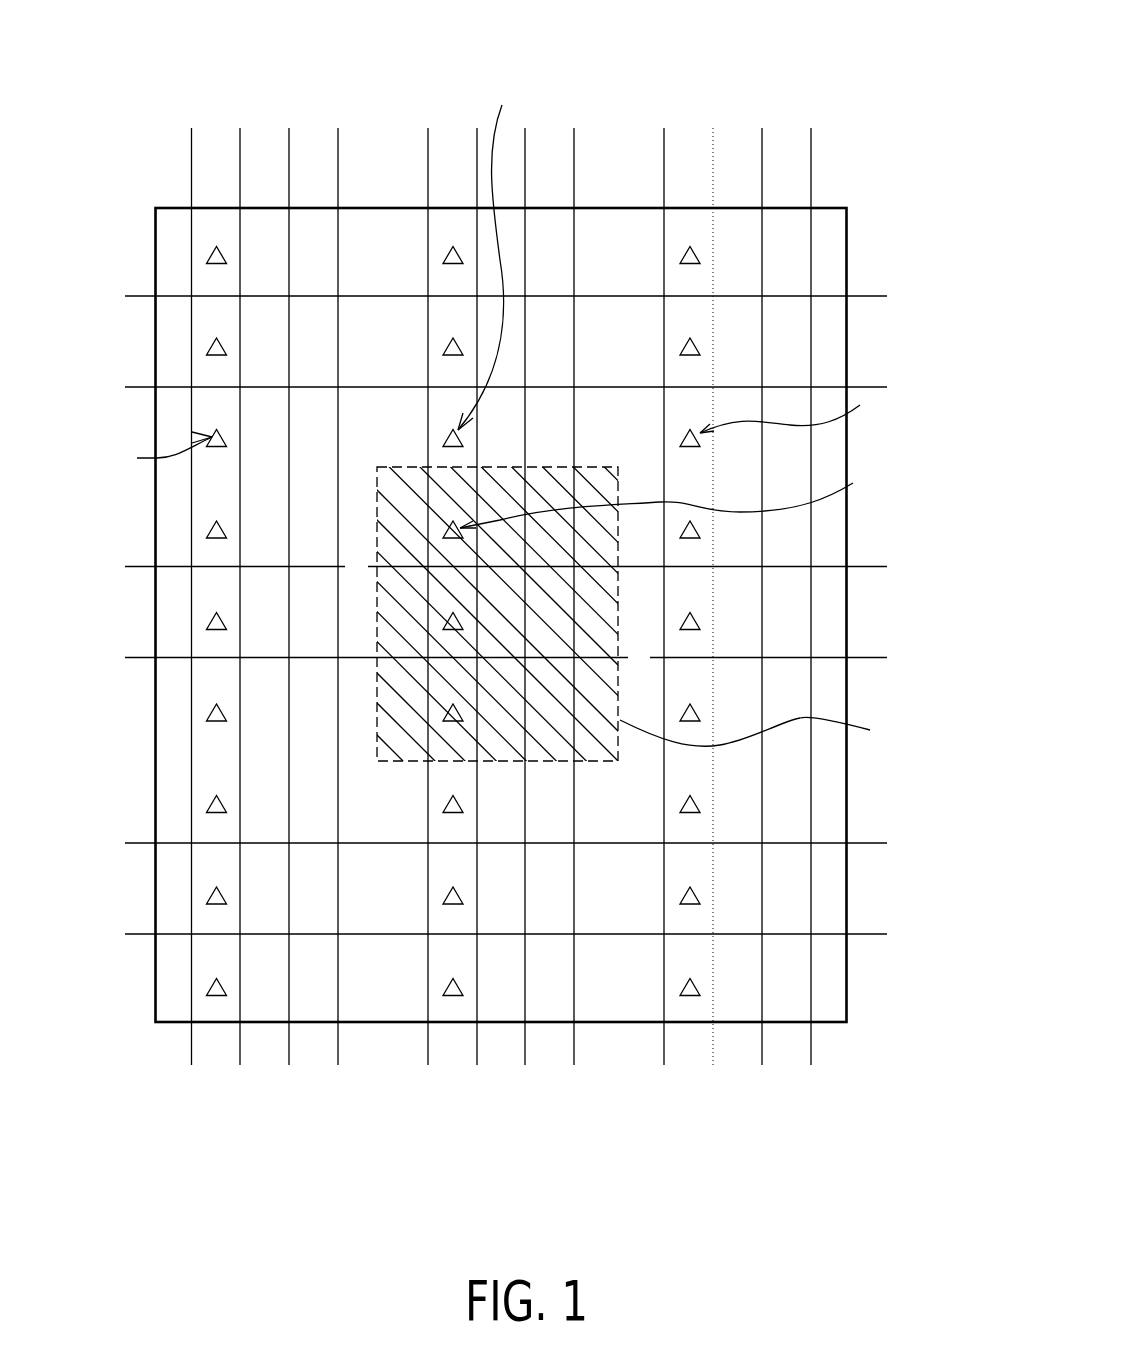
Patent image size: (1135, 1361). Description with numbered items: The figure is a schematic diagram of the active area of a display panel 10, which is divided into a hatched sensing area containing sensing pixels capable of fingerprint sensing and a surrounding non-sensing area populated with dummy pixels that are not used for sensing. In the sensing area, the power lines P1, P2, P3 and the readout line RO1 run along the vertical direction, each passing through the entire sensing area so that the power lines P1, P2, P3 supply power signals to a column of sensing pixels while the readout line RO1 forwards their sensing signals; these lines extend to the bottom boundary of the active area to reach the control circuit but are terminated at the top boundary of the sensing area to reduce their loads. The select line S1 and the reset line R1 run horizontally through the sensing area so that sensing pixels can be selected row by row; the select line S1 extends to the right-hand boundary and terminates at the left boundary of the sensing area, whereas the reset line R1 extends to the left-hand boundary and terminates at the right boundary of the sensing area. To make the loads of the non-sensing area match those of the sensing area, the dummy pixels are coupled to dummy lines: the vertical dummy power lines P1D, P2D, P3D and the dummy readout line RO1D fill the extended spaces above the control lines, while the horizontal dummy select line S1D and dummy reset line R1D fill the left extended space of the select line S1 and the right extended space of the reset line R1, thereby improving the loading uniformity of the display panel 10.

The display panel 10 is at (504, 587).
The dummy select line S1D is at (472, 570).
The dummy reset line R1D is at (498, 662).
The select line S1 is at (646, 565).
The reset line R1 is at (355, 660).
The dummy power line P1D is at (192, 1048).
The dummy power line P2D is at (289, 1048).
The dummy power line P3D is at (240, 1048).
The dummy readout line RO1D is at (338, 1048).
The power line P1 is at (428, 1048).
The power line P2 is at (525, 1048).
The power line P3 is at (477, 1048).
The readout line RO1 is at (574, 1048).